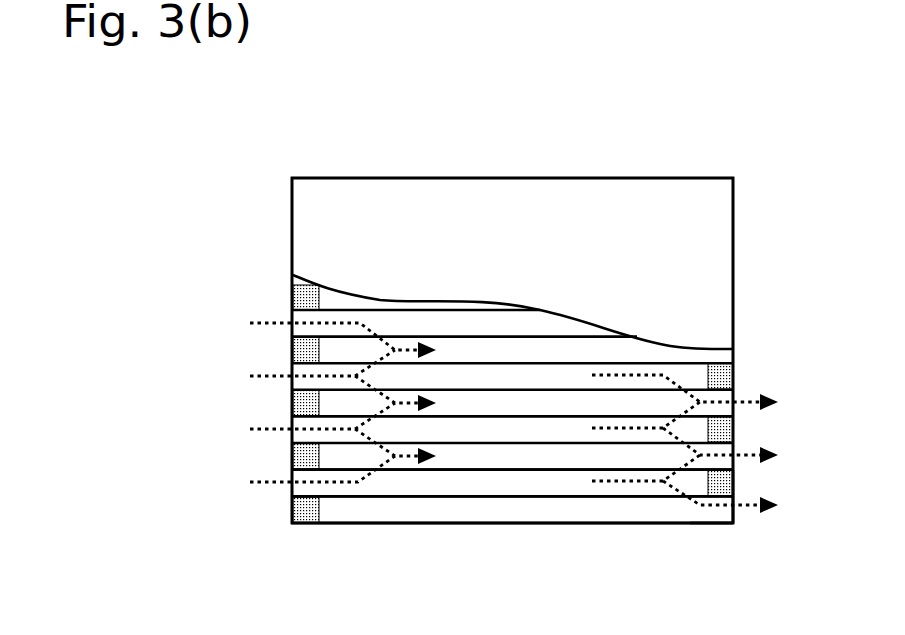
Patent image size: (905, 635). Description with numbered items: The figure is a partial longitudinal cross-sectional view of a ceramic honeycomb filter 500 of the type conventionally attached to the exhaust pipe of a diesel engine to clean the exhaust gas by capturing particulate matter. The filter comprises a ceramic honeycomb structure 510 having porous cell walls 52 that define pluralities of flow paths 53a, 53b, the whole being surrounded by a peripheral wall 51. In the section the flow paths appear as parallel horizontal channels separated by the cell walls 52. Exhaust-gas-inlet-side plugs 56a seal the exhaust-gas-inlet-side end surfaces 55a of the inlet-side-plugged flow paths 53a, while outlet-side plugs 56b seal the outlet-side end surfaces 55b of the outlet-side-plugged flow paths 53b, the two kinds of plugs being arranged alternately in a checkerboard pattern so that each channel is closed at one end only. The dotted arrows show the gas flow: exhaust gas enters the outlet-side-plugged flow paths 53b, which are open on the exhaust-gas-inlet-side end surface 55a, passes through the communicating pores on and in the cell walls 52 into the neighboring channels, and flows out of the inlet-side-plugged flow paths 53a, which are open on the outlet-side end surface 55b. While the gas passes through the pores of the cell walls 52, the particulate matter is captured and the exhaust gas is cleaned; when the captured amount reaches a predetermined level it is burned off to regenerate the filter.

The ceramic honeycomb filter 500 is at (345, 119).
The ceramic honeycomb structure 510 is at (483, 177).
The peripheral wall 51 is at (362, 523).
The porous cell walls 52 is at (440, 497).
The inlet-side-plugged flow paths 53a is at (495, 453).
The outlet-side-plugged flow paths 53b is at (568, 483).
The exhaust-gas-inlet-side end surface 55a is at (292, 510).
The outlet-side end surface 55b is at (737, 518).
The exhaust-gas-inlet-side plugs 56a is at (310, 458).
The outlet-side plugs 56b is at (727, 485).